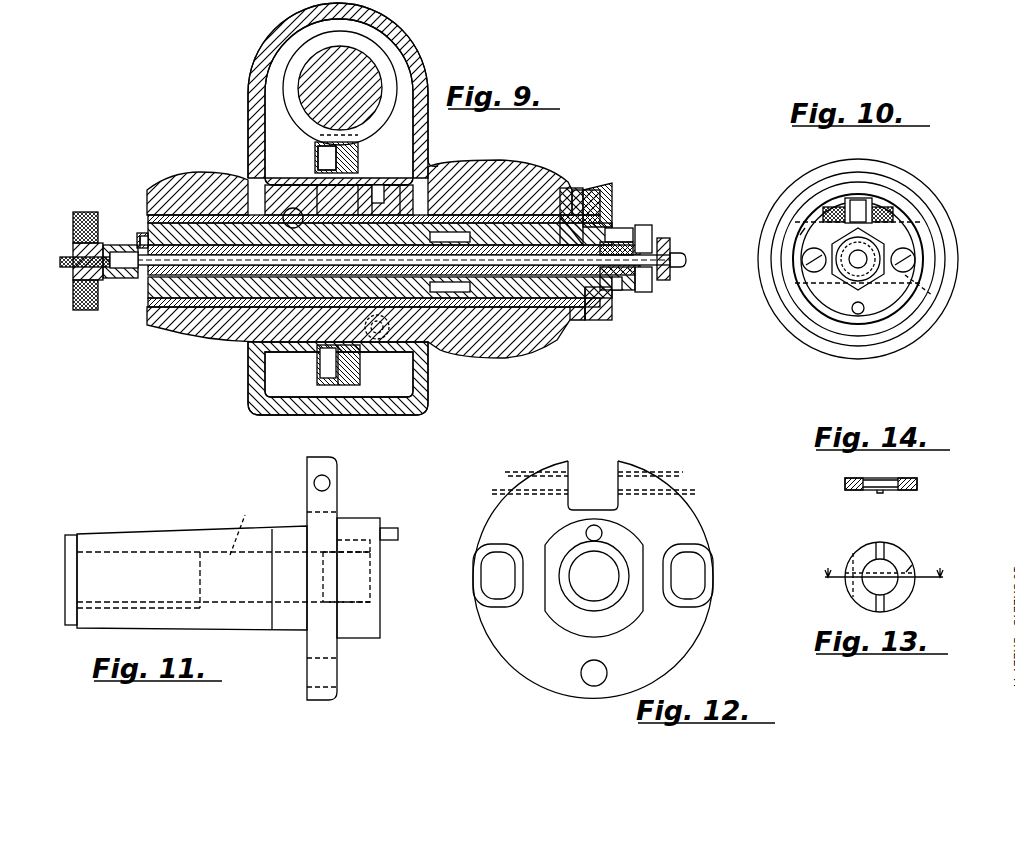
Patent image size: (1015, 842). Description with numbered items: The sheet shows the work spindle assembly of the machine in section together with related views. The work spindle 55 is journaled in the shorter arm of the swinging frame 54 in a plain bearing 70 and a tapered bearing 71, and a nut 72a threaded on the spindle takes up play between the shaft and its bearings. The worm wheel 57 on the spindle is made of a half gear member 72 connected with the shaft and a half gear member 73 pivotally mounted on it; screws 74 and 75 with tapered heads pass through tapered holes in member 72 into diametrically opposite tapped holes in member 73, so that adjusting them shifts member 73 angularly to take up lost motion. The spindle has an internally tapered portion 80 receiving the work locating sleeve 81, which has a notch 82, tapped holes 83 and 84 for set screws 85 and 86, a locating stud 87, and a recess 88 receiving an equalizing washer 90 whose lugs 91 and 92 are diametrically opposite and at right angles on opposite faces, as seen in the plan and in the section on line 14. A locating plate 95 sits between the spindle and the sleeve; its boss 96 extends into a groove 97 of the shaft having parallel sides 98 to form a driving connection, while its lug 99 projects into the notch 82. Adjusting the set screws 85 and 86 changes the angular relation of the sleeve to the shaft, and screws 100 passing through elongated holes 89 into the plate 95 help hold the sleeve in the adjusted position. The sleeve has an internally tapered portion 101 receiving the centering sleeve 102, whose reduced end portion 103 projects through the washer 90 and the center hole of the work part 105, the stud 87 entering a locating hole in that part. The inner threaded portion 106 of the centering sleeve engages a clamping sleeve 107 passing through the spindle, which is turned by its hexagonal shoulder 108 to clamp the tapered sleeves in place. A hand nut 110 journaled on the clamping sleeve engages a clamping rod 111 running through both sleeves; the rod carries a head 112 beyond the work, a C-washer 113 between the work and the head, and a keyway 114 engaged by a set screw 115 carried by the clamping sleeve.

In FIG. 9, the swinging frame 54 is at (196, 176).
In FIG. 10, the swinging frame 54 is at (912, 333).
In FIG. 9, the work spindle 55 is at (484, 212).
In FIG. 10, the work spindle 55 is at (922, 230).
In FIG. 9, the worm wheel 57 is at (306, 174).
In FIG. 9, the plain bearing 70 is at (175, 216).
In FIG. 9, the tapered bearing 71 is at (566, 190).
In FIG. 10, the tapered bearing 71 is at (882, 337).
In FIG. 9, the half gear member 72 is at (318, 340).
In FIG. 9, the nut 72a is at (415, 186).
In FIG. 9, the half gear member 73 is at (360, 150).
In FIG. 9, the screw 74 is at (320, 158).
In FIG. 9, the screw 75 is at (318, 364).
In FIG. 9, the internally tapered portion 80 is at (572, 212).
In FIG. 9, the work locating sleeve 81 is at (612, 288).
In FIG. 10, the work locating sleeve 81 is at (842, 327).
In FIG. 11, the work locating sleeve 81 is at (300, 628).
In FIG. 12, the work locating sleeve 81 is at (515, 664).
In FIG. 12, the notch 82 is at (600, 488).
In FIG. 12, the tapped hole 83 is at (536, 484).
In FIG. 12, the tapped hole 84 is at (657, 486).
In FIG. 10, the set screw 85 is at (818, 213).
In FIG. 10, the set screw 86 is at (900, 212).
In FIG. 9, the locating stud 87 is at (618, 236).
In FIG. 11, the locating stud 87 is at (395, 530).
In FIG. 12, the locating stud 87 is at (603, 532).
In FIG. 11, the recess 88 is at (380, 578).
In FIG. 12, the recess 88 is at (622, 566).
In FIG. 11, the elongated hole 89 is at (340, 648).
In FIG. 12, the elongated hole 89 is at (497, 568).
In FIG. 9, the equalizing washer 90 is at (648, 280).
In FIG. 13, the equalizing washer 90 is at (858, 590).
In FIG. 14, the equalizing washer 90 is at (918, 482).
In FIG. 13, the lug 91 is at (886, 545).
In FIG. 14, the lug 91 is at (880, 494).
In FIG. 13, the lug 92 is at (853, 555).
In FIG. 14, the lug 92 is at (846, 480).
In FIG. 9, the locating plate 95 is at (588, 312).
In FIG. 10, the locating plate 95 is at (852, 200).
In FIG. 9, the boss 96 is at (608, 203).
In FIG. 9, the groove 97 is at (565, 330).
In FIG. 9, the parallel side 98 is at (580, 326).
In FIG. 10, the parallel side 98 is at (796, 238).
In FIG. 9, the lug 99 is at (612, 240).
In FIG. 10, the lug 99 is at (862, 205).
In FIG. 10, the screw 100 is at (913, 258).
In FIG. 11, the internally tapered portion 101 is at (247, 522).
In FIG. 9, the centering sleeve 102 is at (622, 290).
In FIG. 9, the reduced end portion 103 is at (655, 246).
In FIG. 9, the work part 105 is at (645, 232).
In FIG. 9, the screw threaded portion 106 is at (520, 300).
In FIG. 9, the clamping sleeve 107 is at (143, 240).
In FIG. 9, the hexagonal shoulder 108 is at (150, 288).
In FIG. 9, the hand nut 110 is at (74, 224).
In FIG. 9, the clamping rod 111 is at (62, 262).
In FIG. 9, the head 112 is at (680, 259).
In FIG. 9, the C-washer 113 is at (665, 242).
In FIG. 10, the C-washer 113 is at (845, 290).
In FIG. 9, the keyway 114 is at (136, 245).
In FIG. 9, the set screw 115 is at (140, 240).
In FIG. 13, the section line 14 is at (889, 563).